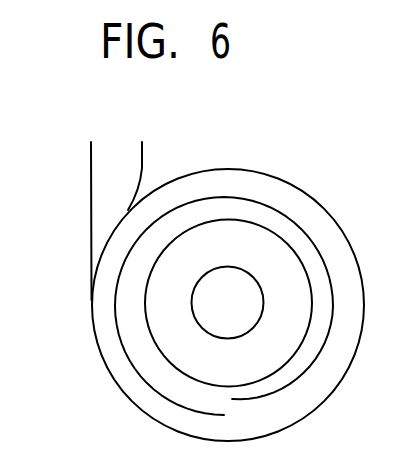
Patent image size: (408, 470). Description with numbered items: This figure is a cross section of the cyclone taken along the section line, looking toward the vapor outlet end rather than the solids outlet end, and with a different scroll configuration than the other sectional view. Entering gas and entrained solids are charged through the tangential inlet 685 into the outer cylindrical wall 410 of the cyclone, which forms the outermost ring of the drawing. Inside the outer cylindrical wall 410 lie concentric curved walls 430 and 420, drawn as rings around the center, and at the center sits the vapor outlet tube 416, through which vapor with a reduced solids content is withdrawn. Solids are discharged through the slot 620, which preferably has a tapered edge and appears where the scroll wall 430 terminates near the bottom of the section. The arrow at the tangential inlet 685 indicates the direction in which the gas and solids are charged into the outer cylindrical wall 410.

The outer cylindrical wall 410 is at (284, 183).
The coil ring 430 is at (311, 240).
The vapor outlet tube 416 is at (245, 266).
The inner ring 420 is at (148, 318).
The slot 620 is at (229, 406).
The tangential inlet 685 is at (108, 170).